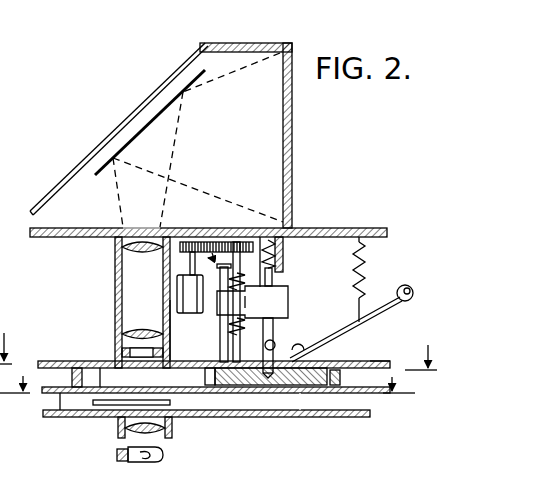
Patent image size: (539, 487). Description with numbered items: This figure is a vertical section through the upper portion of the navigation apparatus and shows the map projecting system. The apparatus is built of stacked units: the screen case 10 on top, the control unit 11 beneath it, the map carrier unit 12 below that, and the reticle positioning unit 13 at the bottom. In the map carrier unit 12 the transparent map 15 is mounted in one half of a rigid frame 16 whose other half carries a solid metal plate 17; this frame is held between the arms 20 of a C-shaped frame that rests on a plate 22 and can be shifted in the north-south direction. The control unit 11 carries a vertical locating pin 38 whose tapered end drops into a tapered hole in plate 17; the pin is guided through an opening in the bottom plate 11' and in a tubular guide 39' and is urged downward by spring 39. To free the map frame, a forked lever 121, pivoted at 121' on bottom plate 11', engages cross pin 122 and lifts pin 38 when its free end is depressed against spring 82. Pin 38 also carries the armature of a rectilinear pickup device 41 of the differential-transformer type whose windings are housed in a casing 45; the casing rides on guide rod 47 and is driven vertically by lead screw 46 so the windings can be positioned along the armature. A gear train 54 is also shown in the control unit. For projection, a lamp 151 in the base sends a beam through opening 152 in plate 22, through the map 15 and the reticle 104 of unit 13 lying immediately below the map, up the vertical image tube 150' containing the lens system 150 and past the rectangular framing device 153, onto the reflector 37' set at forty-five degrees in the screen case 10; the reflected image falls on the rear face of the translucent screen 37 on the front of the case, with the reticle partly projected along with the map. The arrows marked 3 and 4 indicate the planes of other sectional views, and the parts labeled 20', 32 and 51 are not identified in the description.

The screen case 10 is at (117, 122).
The control unit 11 is at (208, 256).
The bottom plate of control unit 11' is at (392, 355).
The map carrier unit 12 is at (42, 380).
The reticle positioning unit 13 is at (25, 413).
The transparency 15 is at (100, 385).
The rigid frame 16 is at (78, 382).
The solid metal plate 17 is at (237, 391).
The arms 20 is at (216, 382).
The plate spacer 20' is at (61, 404).
The plate 22 is at (292, 397).
The mounting block 32 is at (272, 376).
The translucent screen 37 is at (263, 135).
The reflector 37' is at (198, 140).
The locating pin 38 is at (278, 285).
The spring 39 is at (289, 262).
The tubular guide 39' is at (305, 257).
The rectilinear pickup device 41 is at (298, 313).
The casing 45 is at (288, 305).
The lead screw 46 is at (238, 330).
The guide rod 47 is at (222, 318).
The drive motor 51 is at (195, 313).
The gear train 54 is at (226, 228).
The spring 82 is at (362, 285).
The reticle 104 is at (172, 402).
The forked lever 121 is at (351, 323).
The pivot 121' is at (329, 354).
The cross pin 122 is at (276, 346).
The lens system 150 is at (113, 290).
The vertical image tube 150' is at (116, 302).
The lamp 151 is at (167, 448).
The opening 152 is at (152, 389).
The rectangular framing device 153 is at (168, 343).
The section line 3 is at (224, 351).
The section line 4 is at (207, 386).